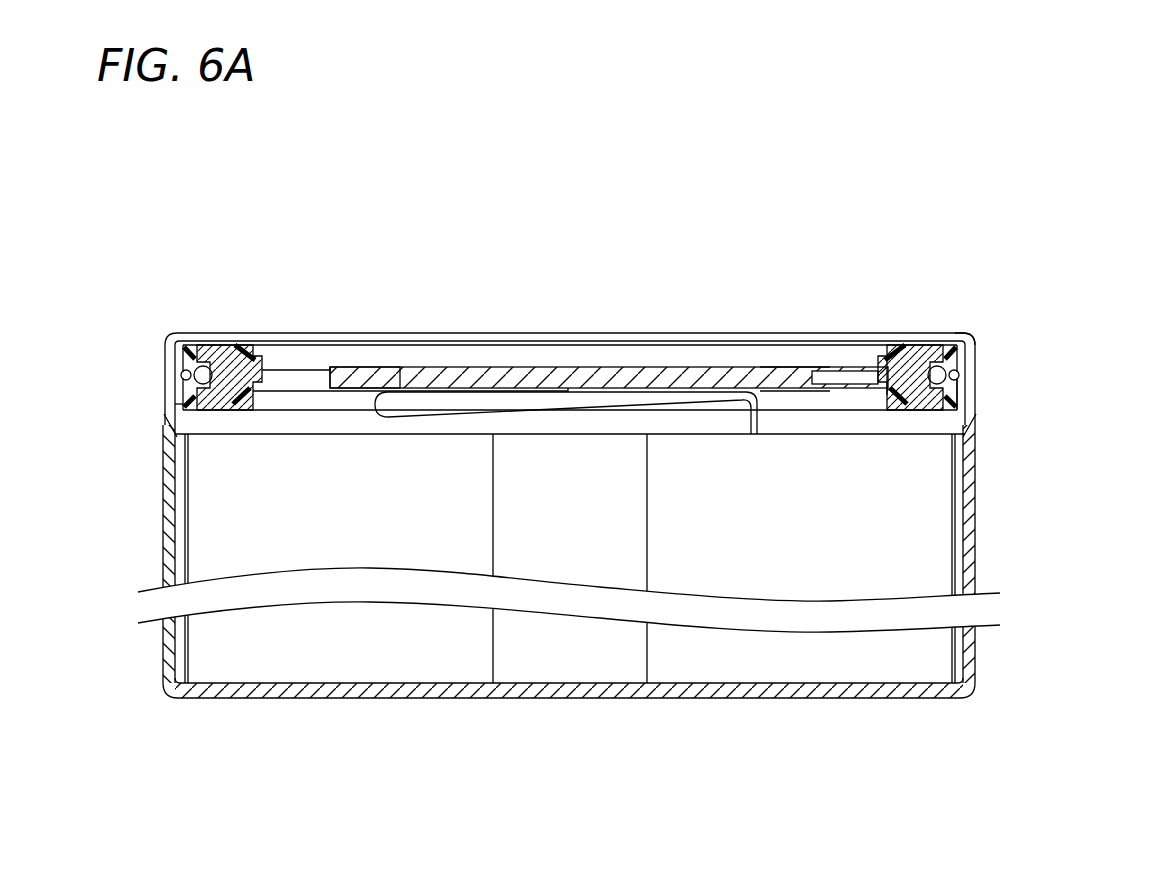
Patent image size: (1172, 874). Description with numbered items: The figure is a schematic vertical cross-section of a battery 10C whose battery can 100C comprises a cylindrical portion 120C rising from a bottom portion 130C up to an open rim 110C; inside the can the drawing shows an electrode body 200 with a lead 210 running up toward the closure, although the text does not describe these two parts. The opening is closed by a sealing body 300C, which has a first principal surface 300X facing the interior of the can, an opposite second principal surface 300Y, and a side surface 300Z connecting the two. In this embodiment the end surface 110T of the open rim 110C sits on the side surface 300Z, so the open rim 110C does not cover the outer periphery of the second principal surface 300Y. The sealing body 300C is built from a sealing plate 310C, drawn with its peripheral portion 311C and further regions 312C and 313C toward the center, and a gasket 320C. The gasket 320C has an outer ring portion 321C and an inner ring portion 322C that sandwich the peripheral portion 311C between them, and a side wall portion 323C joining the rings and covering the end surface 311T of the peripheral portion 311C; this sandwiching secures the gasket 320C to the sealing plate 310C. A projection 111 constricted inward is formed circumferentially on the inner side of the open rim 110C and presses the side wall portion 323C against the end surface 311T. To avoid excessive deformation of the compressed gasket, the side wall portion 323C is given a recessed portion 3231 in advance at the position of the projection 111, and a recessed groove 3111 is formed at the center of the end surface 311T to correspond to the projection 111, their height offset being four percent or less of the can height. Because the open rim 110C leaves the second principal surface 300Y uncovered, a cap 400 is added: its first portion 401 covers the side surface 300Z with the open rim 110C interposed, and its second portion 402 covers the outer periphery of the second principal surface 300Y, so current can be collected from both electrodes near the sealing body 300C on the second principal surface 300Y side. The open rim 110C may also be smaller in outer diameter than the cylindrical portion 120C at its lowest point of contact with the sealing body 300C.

The battery 10C is at (605, 236).
The battery can 100C is at (1070, 353).
The open rim 110C is at (1009, 353).
The cylindrical portion 120C is at (1009, 755).
The bottom portion of outer can 130C is at (678, 698).
The end surface 110T is at (963, 340).
The projection 111 is at (905, 378).
The electrode body 200 is at (213, 528).
The tab 210 is at (653, 400).
The sealing body 300C is at (138, 230).
The sealing plate 310C is at (290, 271).
The peripheral portion 311C is at (287, 375).
The second portion of first sealing member 312C is at (450, 372).
The third portion of first sealing member 313C is at (362, 368).
The end surface 311T is at (177, 401).
The recessed groove 3111 is at (895, 368).
The gasket 320C is at (53, 271).
The outer ring portion 321C is at (228, 352).
The inner ring portion 322C is at (187, 408).
The side wall portion 323C is at (184, 362).
The recessed portion 3231 is at (180, 368).
The first principal surface 300X is at (797, 398).
The second principal surface 300Y is at (793, 360).
The side surface 300Z is at (966, 404).
The cap 400 is at (923, 234).
The first portion 401 is at (970, 356).
The second portion 402 is at (928, 338).